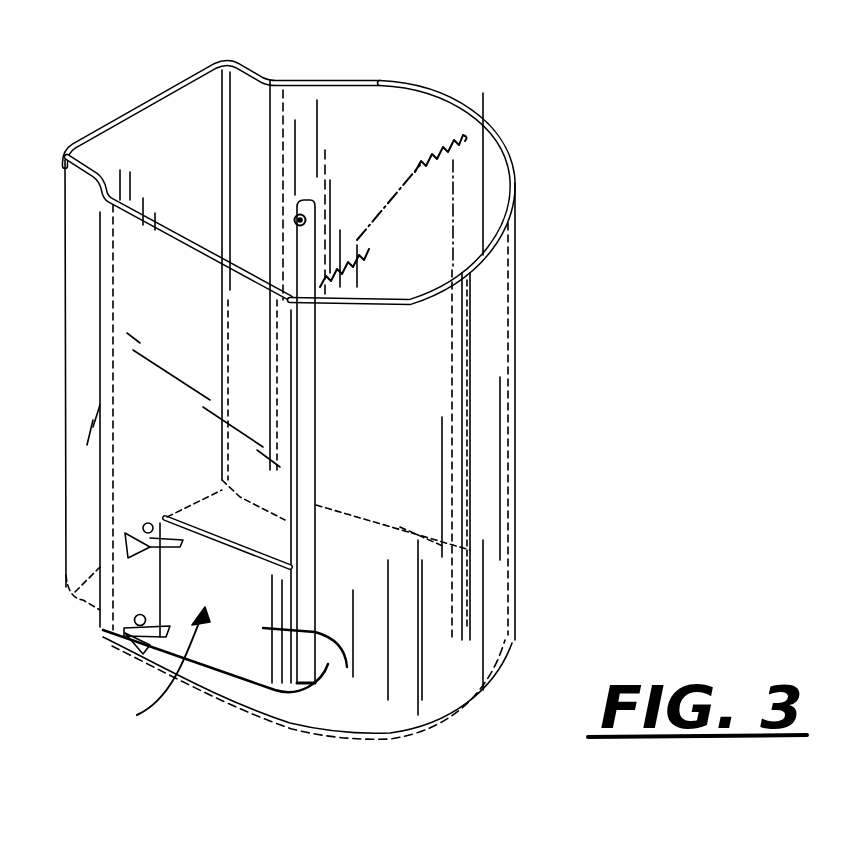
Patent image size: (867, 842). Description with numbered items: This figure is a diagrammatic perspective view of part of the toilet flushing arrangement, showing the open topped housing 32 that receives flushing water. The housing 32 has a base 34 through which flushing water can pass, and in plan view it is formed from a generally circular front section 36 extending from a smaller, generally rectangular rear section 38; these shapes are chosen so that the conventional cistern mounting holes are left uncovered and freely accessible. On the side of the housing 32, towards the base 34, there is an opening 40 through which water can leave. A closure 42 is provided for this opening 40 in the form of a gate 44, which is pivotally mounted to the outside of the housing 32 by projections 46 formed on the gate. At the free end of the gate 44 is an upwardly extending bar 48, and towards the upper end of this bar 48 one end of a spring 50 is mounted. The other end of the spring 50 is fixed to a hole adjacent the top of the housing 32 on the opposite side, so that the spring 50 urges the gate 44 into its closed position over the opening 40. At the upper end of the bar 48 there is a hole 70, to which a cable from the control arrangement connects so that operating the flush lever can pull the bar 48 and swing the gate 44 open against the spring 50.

The housing 32 is at (515, 338).
The base 34 is at (394, 715).
The circular front section 36 is at (437, 103).
The rectangular rear section 38 is at (260, 78).
The opening 40 is at (347, 667).
The closure 42 is at (153, 673).
The gate 44 is at (230, 643).
The projections 46 is at (123, 633).
The bar 48 is at (298, 497).
The spring 50 is at (450, 135).
The hole 70 is at (301, 214).